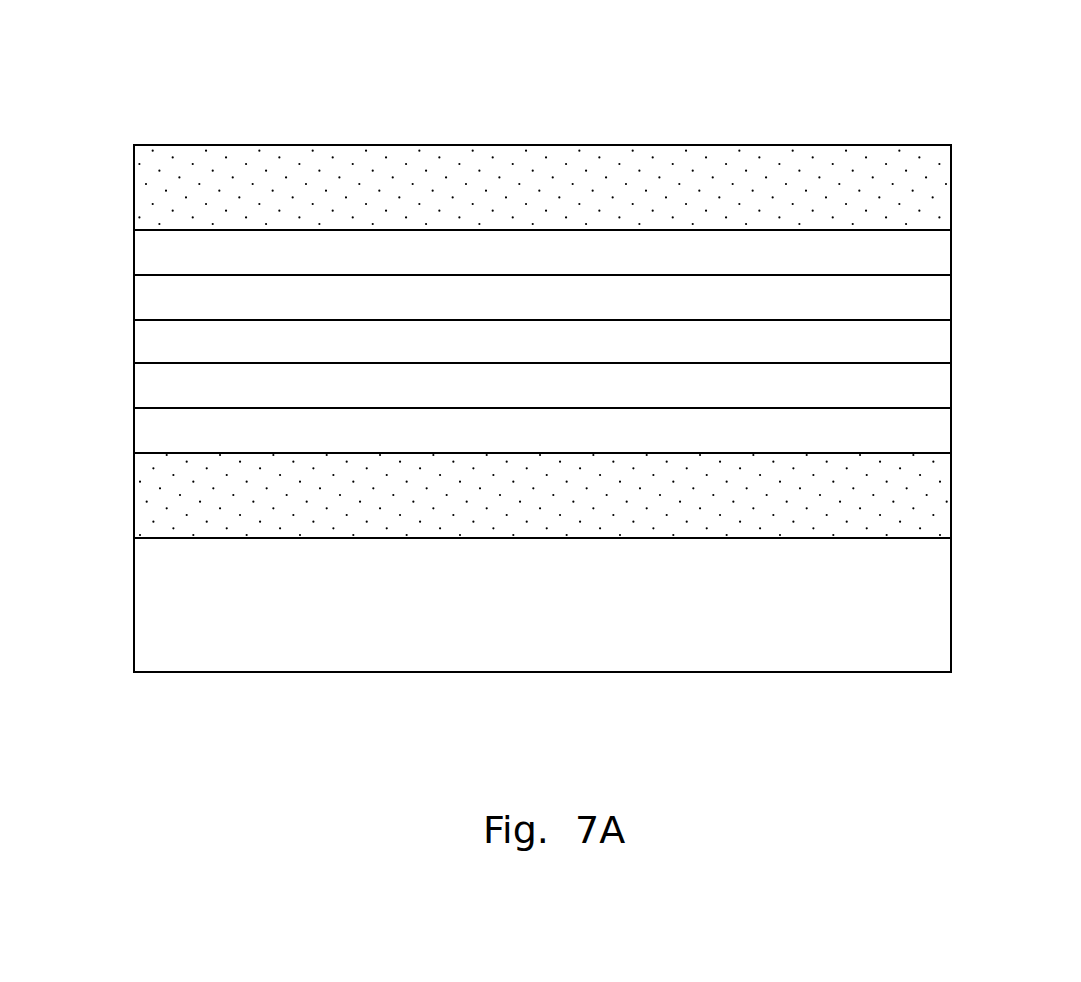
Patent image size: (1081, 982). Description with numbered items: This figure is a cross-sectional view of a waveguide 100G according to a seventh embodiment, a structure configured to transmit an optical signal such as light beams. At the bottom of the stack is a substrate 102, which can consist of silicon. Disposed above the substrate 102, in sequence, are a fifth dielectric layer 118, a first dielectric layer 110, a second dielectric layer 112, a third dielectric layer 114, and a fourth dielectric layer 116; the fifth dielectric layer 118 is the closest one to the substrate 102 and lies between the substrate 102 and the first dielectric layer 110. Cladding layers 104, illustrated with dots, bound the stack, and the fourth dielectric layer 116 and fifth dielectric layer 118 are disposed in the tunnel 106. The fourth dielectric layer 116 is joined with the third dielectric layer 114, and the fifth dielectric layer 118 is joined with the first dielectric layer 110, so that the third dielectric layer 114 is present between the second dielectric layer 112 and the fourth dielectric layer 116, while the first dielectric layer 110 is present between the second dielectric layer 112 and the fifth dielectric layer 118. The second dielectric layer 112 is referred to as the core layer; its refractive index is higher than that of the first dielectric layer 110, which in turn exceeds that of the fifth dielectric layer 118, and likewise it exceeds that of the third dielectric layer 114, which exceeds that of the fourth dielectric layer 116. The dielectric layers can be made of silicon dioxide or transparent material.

The waveguide 100G is at (93, 79).
The substrate 102 is at (942, 605).
The cladding layers 104 is at (942, 188).
The tunnel 106 is at (637, 212).
The first dielectric layer 110 is at (942, 387).
The second dielectric layer 112 is at (942, 343).
The third dielectric layer 114 is at (942, 298).
The fourth dielectric layer 116 is at (942, 253).
The fifth dielectric layer 118 is at (942, 432).